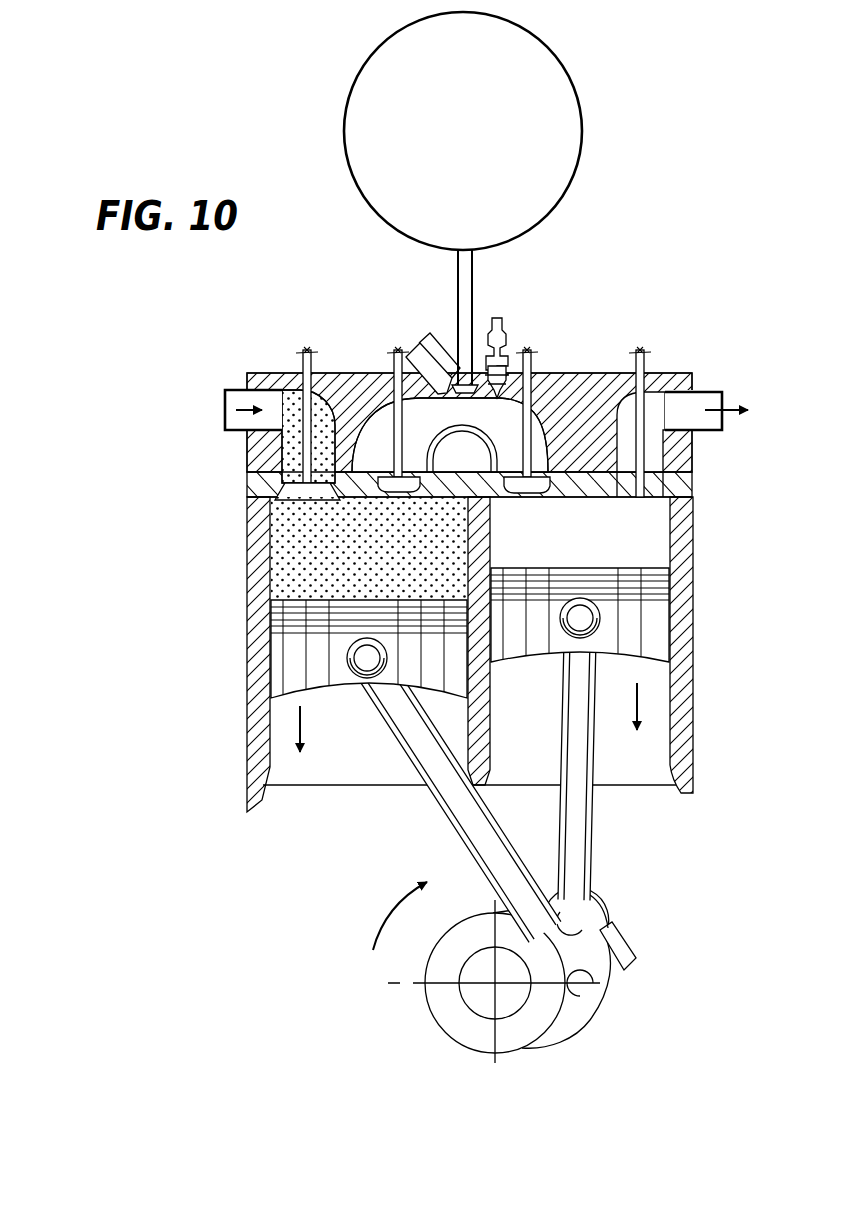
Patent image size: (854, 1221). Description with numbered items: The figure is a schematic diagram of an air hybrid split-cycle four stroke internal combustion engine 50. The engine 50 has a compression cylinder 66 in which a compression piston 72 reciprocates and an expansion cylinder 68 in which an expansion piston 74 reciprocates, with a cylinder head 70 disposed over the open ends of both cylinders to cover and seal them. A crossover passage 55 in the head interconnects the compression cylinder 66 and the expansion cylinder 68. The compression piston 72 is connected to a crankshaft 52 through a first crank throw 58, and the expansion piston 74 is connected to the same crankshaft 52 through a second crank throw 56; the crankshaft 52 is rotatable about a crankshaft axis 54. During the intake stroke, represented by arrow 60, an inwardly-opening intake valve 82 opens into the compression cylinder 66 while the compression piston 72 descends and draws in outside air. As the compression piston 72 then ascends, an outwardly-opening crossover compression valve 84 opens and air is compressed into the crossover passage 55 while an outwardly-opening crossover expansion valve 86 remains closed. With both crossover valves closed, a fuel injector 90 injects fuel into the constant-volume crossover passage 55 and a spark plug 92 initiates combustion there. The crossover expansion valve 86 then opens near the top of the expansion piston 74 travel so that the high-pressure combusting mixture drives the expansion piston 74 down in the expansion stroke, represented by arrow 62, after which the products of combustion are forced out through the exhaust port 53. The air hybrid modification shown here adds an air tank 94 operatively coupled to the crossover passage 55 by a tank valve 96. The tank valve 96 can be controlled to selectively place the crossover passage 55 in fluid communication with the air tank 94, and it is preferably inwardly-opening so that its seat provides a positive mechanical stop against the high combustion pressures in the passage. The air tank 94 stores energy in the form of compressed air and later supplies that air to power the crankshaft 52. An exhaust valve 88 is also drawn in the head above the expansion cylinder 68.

The four stroke internal combustion engine 50 is at (660, 228).
The crankshaft 52 is at (470, 992).
The exhaust port 53 is at (706, 432).
The crankshaft axis 54 is at (497, 985).
The crossover passage 55 is at (545, 445).
The second crank throw 56 is at (600, 913).
The first crank throw 58 is at (600, 1003).
The intake stroke 60 is at (302, 730).
The expansion stroke 62 is at (637, 700).
The compression cylinder 66 is at (276, 532).
The expansion cylinder 68 is at (668, 518).
The cylinder head 70 is at (260, 452).
The compression piston 72 is at (288, 660).
The expansion piston 74 is at (652, 632).
The intake valve 82 is at (297, 360).
The crossover compression valve 84 is at (390, 362).
The crossover expansion valve 86 is at (537, 362).
The exhaust valve 88 is at (648, 363).
The fuel injector 90 is at (425, 358).
The spark plug 92 is at (498, 318).
The air tank 94 is at (405, 95).
The tank valve 96 is at (464, 383).